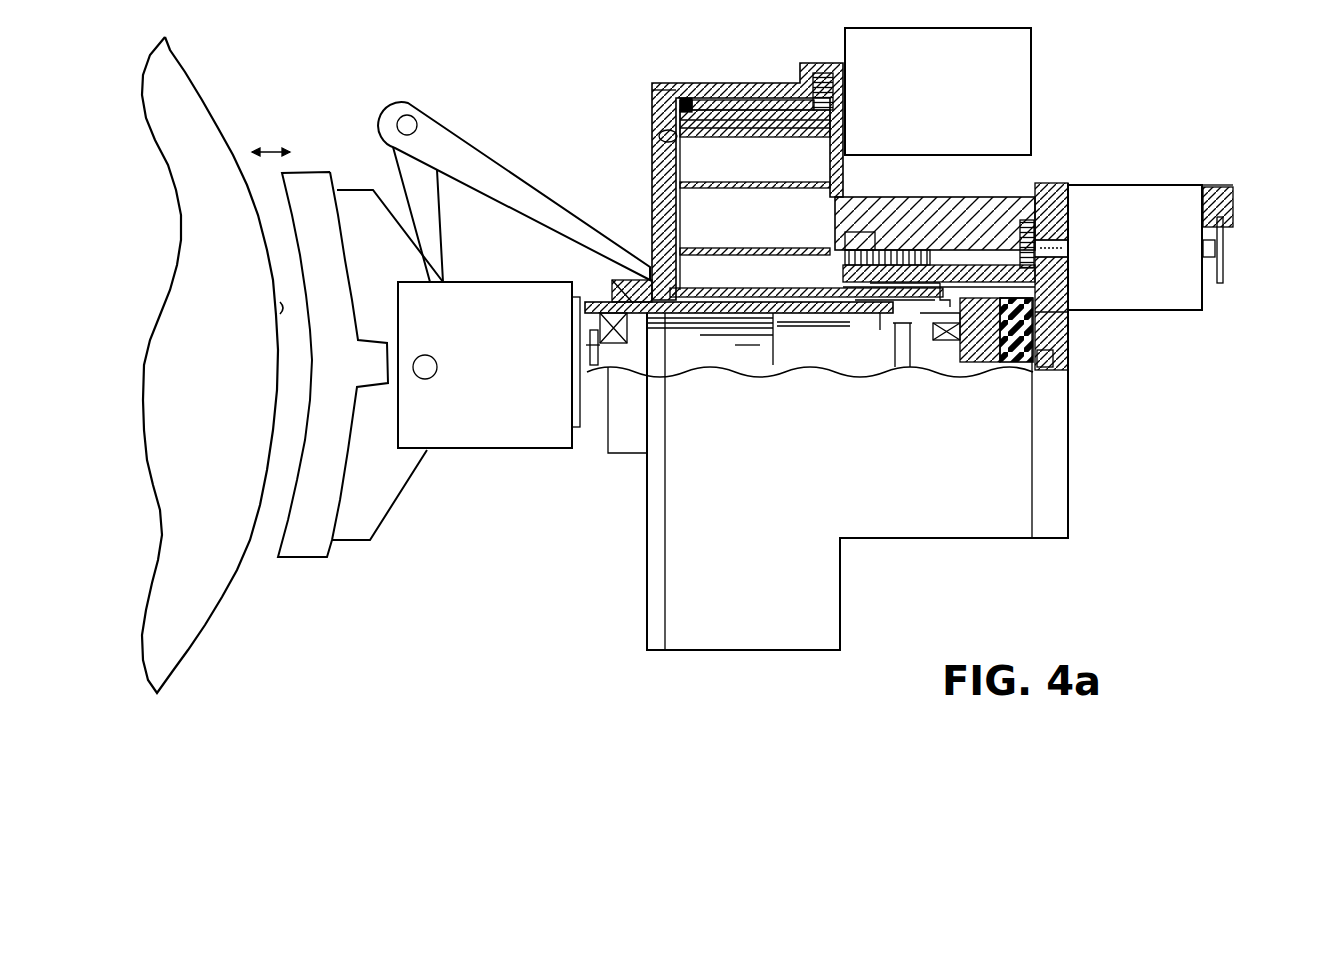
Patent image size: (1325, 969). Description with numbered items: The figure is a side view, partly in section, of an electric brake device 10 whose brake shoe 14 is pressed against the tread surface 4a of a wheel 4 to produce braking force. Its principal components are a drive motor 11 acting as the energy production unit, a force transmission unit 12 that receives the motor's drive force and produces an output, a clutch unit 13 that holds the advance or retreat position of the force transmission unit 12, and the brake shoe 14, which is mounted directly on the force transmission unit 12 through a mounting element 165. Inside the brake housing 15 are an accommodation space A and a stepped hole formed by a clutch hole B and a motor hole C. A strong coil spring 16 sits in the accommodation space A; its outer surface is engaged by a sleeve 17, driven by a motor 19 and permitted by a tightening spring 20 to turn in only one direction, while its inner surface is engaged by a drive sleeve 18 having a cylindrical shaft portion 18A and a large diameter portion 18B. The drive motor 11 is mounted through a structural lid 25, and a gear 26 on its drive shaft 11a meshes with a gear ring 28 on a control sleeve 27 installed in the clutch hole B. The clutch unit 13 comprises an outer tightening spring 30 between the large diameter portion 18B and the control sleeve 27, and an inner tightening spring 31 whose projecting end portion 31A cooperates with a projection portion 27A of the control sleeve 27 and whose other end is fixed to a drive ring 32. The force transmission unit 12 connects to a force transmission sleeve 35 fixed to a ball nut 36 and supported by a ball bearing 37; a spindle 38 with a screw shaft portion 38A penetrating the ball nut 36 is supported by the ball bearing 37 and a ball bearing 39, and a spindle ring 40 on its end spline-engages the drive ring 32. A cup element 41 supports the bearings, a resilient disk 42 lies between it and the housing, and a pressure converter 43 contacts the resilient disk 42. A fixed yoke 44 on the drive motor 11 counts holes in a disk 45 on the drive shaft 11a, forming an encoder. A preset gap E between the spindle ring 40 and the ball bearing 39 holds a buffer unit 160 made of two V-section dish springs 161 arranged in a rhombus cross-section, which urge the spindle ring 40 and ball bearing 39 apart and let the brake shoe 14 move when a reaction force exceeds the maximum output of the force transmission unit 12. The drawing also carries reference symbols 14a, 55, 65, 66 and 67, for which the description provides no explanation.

The wheel 4 is at (200, 598).
The tread surface 4a is at (280, 302).
The brake device 10 is at (1128, 122).
The drive motor 11 is at (1182, 203).
The drive shaft 11a is at (1062, 245).
The force transmission unit 12 is at (577, 425).
The clutch unit 13 is at (848, 318).
The brake shoe 14 is at (305, 545).
The plate bracket 14a is at (365, 518).
The brake housing 15 is at (712, 90).
The coil spring 16 is at (770, 120).
The sleeve 17 is at (738, 95).
The drive sleeve 18 is at (686, 314).
The cylindrical shaft portion 18A is at (738, 292).
The large diameter portion 18B is at (828, 238).
The motor 19 is at (1020, 52).
The tightening spring 20 is at (652, 94).
The structural lid 25 is at (1058, 477).
The gear 26 is at (1042, 242).
The control sleeve 27 is at (987, 252).
The projection portion 27A is at (850, 248).
The gear ring 28 is at (1020, 258).
The outer tightening spring 30 is at (920, 252).
The inner tightening spring 31 is at (920, 260).
The projecting end portion 31A is at (848, 205).
The drive ring 32 is at (863, 315).
The force transmission sleeve 35 is at (637, 280).
The ball nut 36 is at (798, 350).
The ball bearing 37 is at (605, 297).
The spindle 38 is at (745, 343).
The screw shaft portion 38A is at (710, 348).
The ball bearing 39 is at (947, 342).
The spindle ring 40 is at (913, 347).
The cup element 41 is at (988, 345).
The resilient disk 42 is at (1023, 372).
The pressure converter 43 is at (1050, 360).
The fixed yoke 44 is at (1236, 205).
The disk 45 is at (1225, 237).
The pivot pin 55 is at (430, 378).
The lever direction 65 is at (477, 120).
The link 66 is at (400, 170).
The lever arm 67 is at (528, 148).
The buffer unit 160 is at (933, 352).
The dish spring 161 is at (1053, 358).
The mounting element 165 is at (493, 432).
The accommodation space A is at (658, 137).
The clutch hole B is at (970, 250).
The motor hole C is at (1045, 220).
The preset gap E is at (1040, 315).